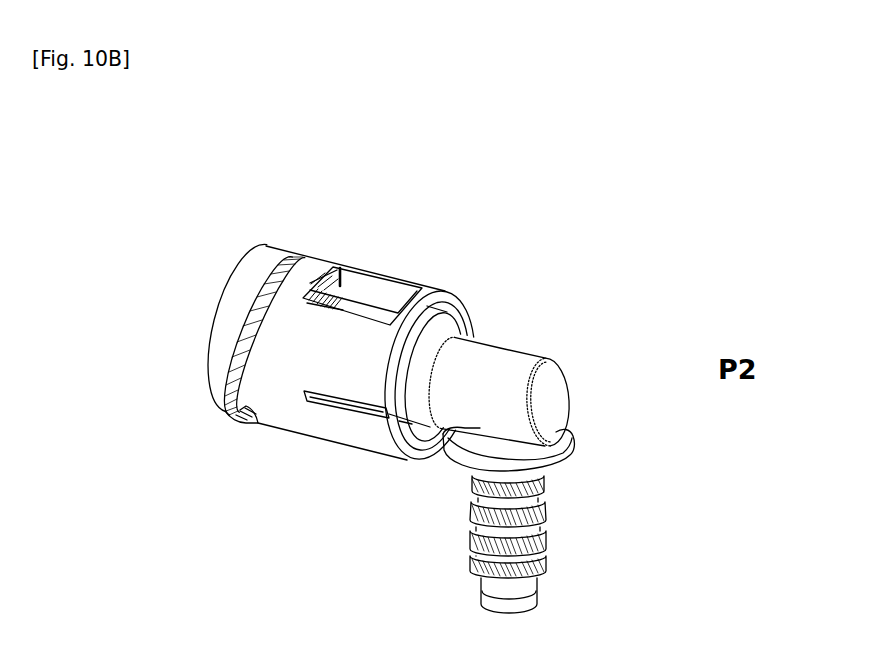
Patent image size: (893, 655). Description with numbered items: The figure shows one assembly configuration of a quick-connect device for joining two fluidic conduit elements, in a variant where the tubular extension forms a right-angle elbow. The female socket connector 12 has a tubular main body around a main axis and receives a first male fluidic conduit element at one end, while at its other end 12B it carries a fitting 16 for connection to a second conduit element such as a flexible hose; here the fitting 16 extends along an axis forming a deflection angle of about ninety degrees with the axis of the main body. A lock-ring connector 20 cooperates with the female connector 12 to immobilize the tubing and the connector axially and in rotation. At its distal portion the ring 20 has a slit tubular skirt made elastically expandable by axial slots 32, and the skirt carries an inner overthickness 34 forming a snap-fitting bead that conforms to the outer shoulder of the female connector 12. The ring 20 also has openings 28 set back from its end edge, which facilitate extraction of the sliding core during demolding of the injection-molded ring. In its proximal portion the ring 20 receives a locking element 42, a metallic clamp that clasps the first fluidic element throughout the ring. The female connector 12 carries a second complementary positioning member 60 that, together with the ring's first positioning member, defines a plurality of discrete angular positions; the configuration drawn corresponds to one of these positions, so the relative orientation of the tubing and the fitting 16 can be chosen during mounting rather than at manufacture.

The lock-ring connector 20 is at (244, 307).
The locking element 42 is at (228, 393).
The opening 28 is at (408, 282).
The second complementary positioning member 60 is at (328, 266).
The axial slot 32 is at (340, 410).
The inner overthickness 34 is at (472, 306).
The female socket connector 12 is at (540, 390).
The fitting 16 is at (546, 540).
The other end 12B is at (482, 598).